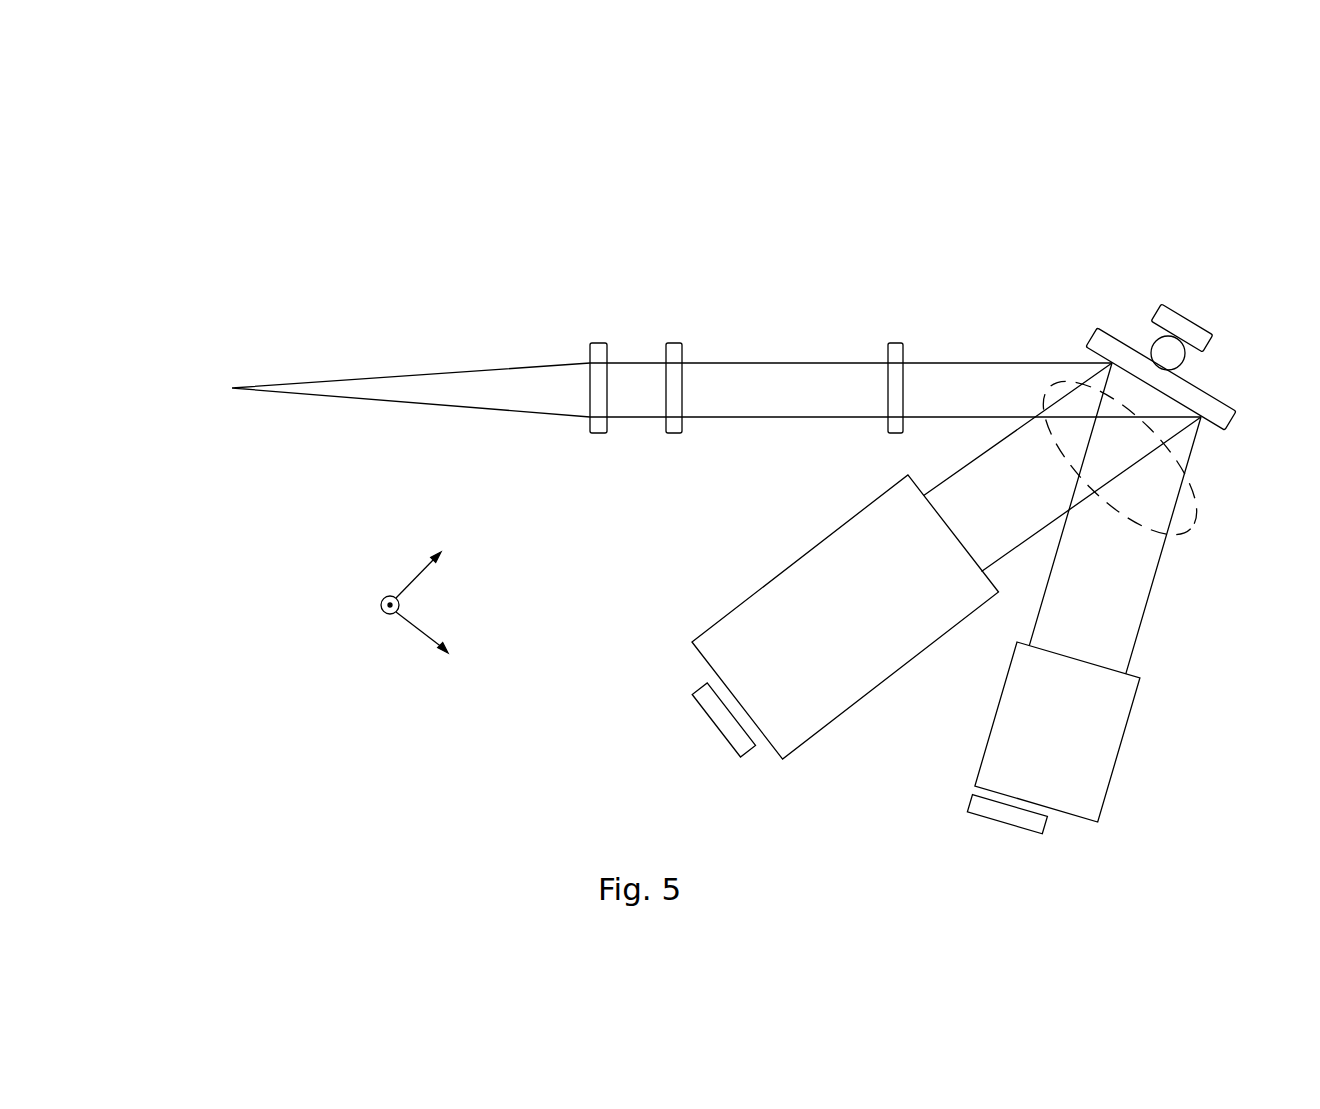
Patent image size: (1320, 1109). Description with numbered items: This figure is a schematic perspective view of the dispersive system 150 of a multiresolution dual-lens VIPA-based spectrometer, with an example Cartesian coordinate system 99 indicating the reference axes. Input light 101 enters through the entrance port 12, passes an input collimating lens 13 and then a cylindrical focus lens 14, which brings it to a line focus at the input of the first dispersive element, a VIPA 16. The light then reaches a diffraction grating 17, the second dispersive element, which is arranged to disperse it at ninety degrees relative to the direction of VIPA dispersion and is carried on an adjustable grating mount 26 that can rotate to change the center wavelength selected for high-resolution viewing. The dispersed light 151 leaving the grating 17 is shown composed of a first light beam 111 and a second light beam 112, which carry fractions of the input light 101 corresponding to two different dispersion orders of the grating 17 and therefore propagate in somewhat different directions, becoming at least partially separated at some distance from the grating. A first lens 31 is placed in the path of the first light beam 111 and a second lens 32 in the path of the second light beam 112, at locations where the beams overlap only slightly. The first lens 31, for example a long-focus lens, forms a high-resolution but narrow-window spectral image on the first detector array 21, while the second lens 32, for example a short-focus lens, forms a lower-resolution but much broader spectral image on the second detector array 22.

The entrance port 12 is at (233, 387).
The input light 101 is at (401, 389).
The input collimating lens 13 is at (587, 357).
The cylindrical focus lens 14 is at (682, 355).
The VIPA 16 is at (903, 348).
The diffraction grating 17 is at (1088, 335).
The dispersive system 150 is at (1060, 208).
The adjustable grating mount 26 is at (1190, 312).
The first light beam 111 is at (970, 456).
The second light beam 112 is at (1146, 551).
The dispersed light 151 is at (1183, 538).
The first lens 31 is at (845, 617).
The second lens 32 is at (1057, 732).
The first detector array 21 is at (702, 688).
The second detector array 22 is at (970, 807).
The Cartesian coordinate system 99 is at (374, 583).